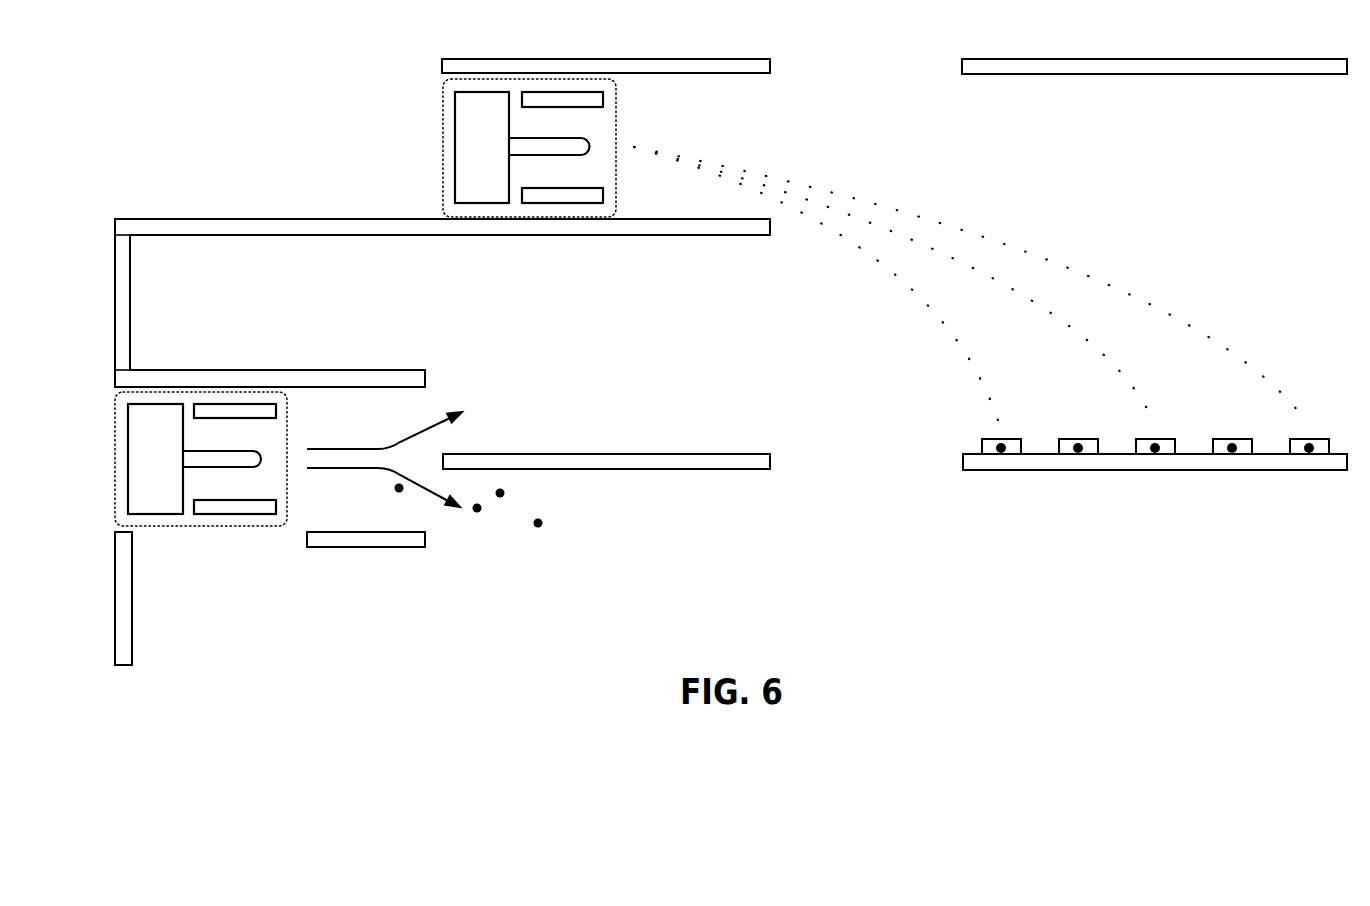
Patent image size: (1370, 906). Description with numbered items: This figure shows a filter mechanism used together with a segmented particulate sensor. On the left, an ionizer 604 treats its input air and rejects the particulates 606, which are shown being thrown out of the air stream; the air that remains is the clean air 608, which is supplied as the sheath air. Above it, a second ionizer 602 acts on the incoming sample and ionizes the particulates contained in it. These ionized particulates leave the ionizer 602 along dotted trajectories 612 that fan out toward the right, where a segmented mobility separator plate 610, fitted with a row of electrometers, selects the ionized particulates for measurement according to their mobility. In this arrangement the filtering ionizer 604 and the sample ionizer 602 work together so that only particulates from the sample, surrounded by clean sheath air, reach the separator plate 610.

The ionizer 602 is at (462, 87).
The ionizer 604 is at (153, 527).
The particulates 606 is at (543, 556).
The clean air 608 is at (481, 449).
The segmented mobility separator plate 610 is at (1307, 453).
The charged particle trajectories 612 is at (1118, 268).